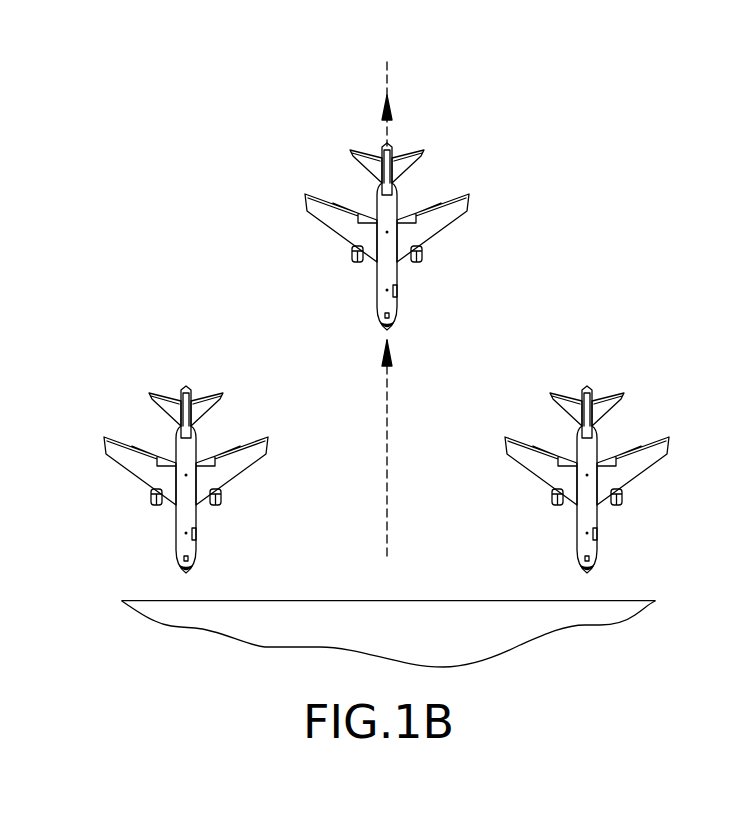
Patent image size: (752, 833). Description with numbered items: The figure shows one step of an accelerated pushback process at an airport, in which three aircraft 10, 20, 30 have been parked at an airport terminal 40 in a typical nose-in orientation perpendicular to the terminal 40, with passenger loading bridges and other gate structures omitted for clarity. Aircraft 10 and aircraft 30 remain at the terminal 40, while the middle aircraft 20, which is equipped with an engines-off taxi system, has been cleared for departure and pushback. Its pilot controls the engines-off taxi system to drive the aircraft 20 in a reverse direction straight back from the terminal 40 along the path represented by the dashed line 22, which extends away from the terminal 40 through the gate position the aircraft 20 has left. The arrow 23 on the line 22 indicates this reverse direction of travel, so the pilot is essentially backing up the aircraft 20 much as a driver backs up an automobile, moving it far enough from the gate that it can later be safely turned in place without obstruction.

The aircraft 10 is at (152, 522).
The aircraft 20 is at (362, 279).
The aircraft 30 is at (563, 522).
The line 22 is at (387, 70).
The arrow 23 is at (382, 111).
The airport terminal 40 is at (592, 603).